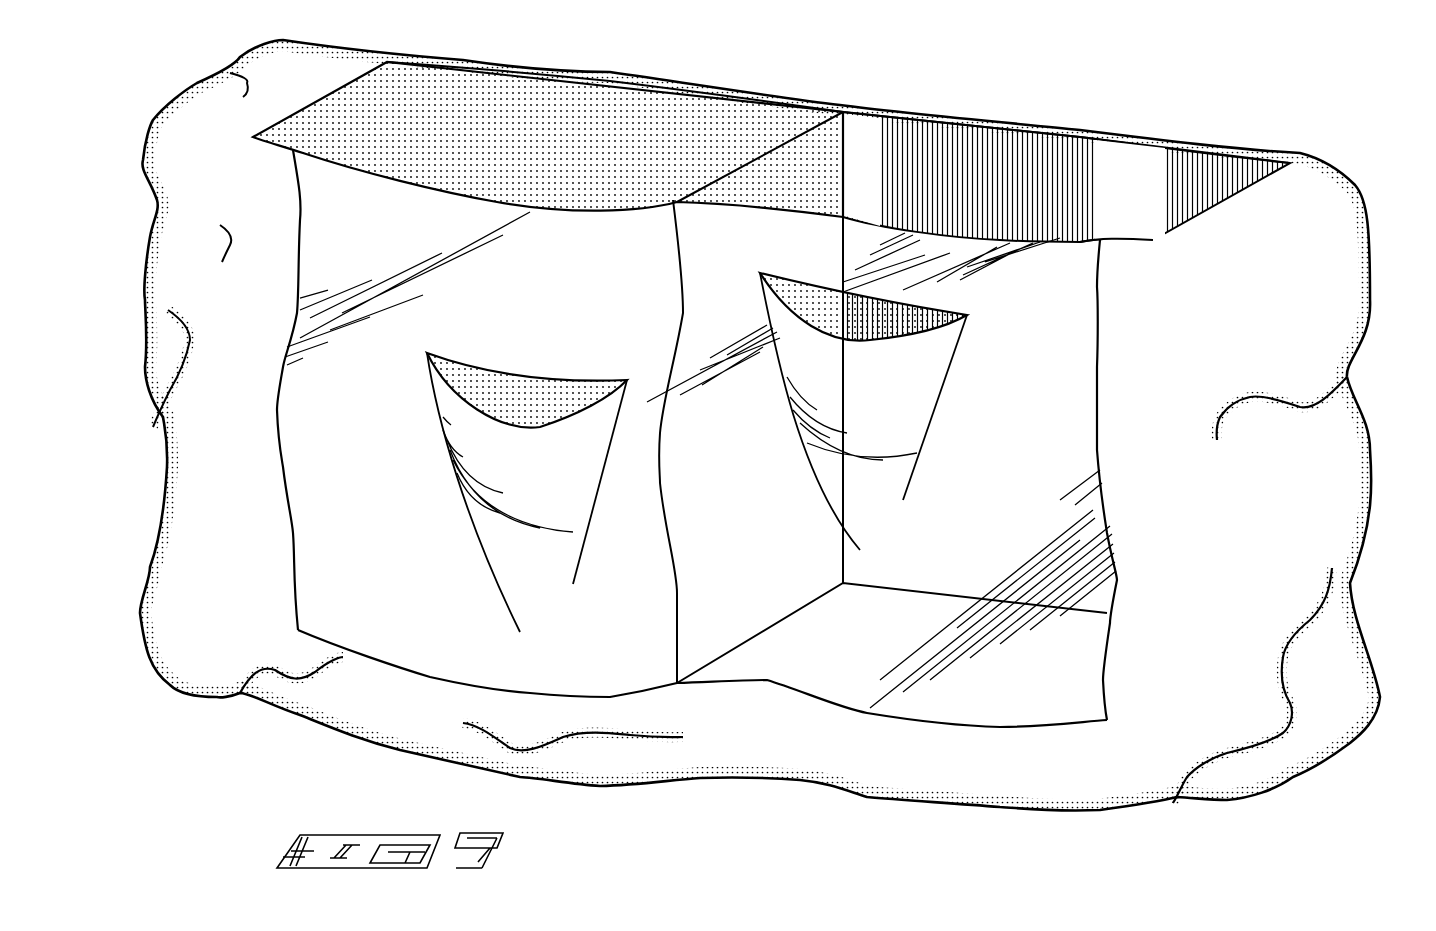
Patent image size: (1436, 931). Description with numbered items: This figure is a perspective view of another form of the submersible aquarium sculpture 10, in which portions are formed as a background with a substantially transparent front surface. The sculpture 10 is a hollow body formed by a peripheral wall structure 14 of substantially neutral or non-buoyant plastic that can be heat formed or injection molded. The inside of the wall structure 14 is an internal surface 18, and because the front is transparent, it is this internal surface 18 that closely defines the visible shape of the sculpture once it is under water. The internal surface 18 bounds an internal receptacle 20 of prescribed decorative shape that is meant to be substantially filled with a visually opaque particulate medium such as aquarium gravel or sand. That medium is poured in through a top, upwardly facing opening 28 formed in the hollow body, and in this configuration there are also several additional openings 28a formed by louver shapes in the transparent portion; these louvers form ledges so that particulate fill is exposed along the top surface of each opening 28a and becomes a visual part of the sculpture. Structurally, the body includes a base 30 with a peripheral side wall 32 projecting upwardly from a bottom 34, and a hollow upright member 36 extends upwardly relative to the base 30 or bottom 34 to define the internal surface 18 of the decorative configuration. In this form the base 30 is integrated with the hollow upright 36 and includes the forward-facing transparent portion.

The protective enclosure assembly 10 is at (1168, 74).
The peripheral wall structure 14 is at (327, 465).
The internal surface 18 is at (1020, 237).
The internal receptacle 20 is at (552, 107).
The top upwardly facing opening 28 is at (843, 153).
The additional openings 28a is at (527, 397).
The base 30 is at (1347, 470).
The peripheral side wall 32 is at (1190, 423).
The bottom 34 is at (823, 663).
The hollow upright member 36 is at (1056, 341).